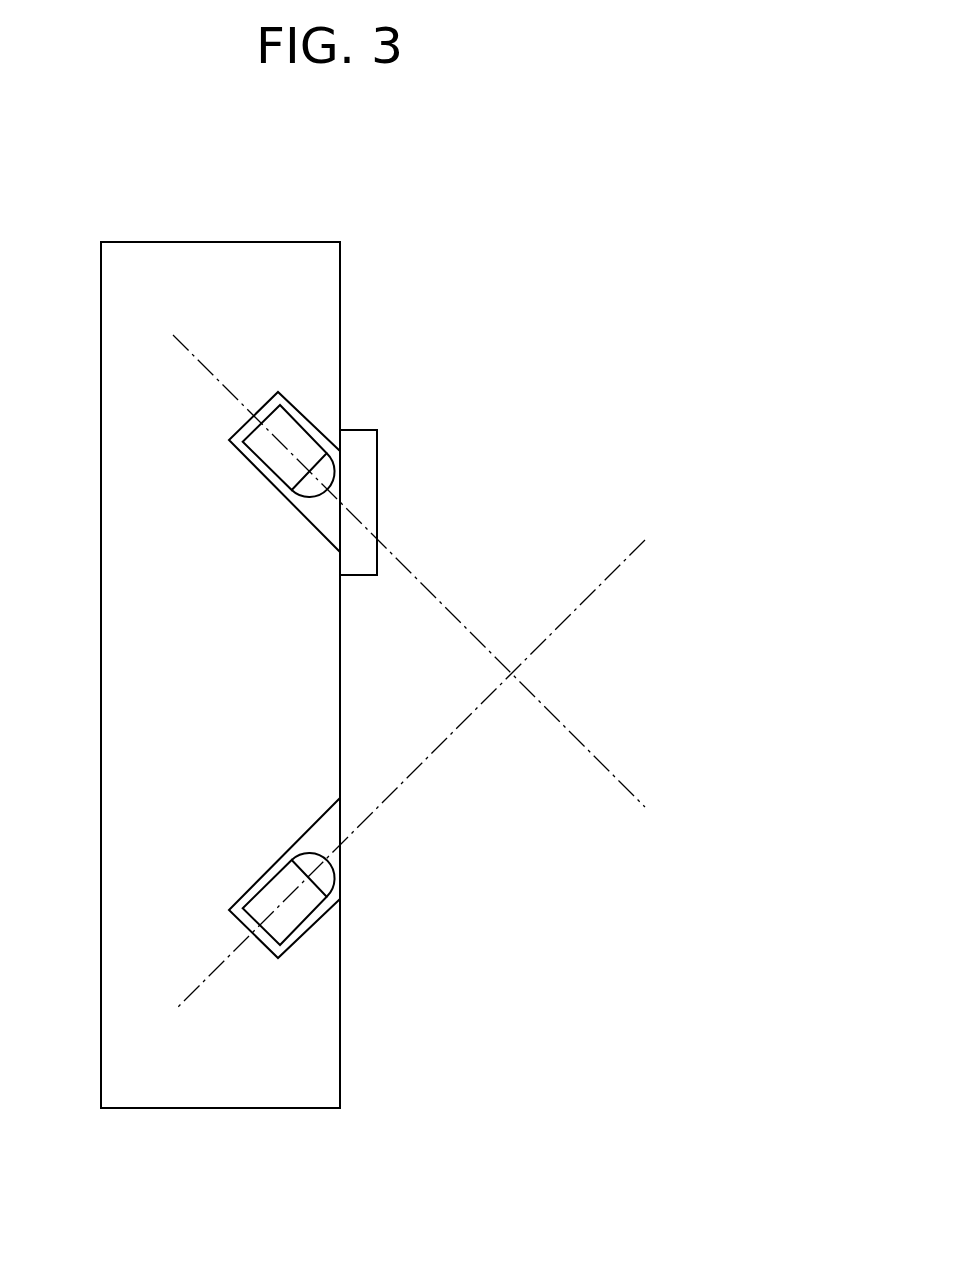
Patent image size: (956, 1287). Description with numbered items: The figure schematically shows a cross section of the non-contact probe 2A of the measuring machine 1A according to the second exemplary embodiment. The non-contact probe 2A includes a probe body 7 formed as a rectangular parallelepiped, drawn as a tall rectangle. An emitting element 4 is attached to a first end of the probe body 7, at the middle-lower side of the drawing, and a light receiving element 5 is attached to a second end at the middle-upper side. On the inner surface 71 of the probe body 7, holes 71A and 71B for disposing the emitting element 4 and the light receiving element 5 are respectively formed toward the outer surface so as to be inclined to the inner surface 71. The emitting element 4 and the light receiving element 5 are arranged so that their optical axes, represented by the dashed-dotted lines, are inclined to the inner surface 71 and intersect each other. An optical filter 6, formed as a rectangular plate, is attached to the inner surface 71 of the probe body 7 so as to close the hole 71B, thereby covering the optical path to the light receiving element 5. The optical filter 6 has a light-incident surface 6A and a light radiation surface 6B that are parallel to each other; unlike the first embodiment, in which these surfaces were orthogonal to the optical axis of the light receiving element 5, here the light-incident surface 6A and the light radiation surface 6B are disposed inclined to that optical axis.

The measuring machine 1A is at (546, 228).
The non-contact probe 2A is at (287, 210).
The emitting element 4 is at (320, 875).
The light receiving element 5 is at (298, 424).
The optical filter 6 is at (364, 577).
The light-incident surface 6A is at (378, 442).
The light radiation surface 6B is at (338, 560).
The probe body 7 is at (110, 615).
The inner surface 71 is at (342, 272).
The hole 71A is at (327, 815).
The hole 71B is at (270, 484).